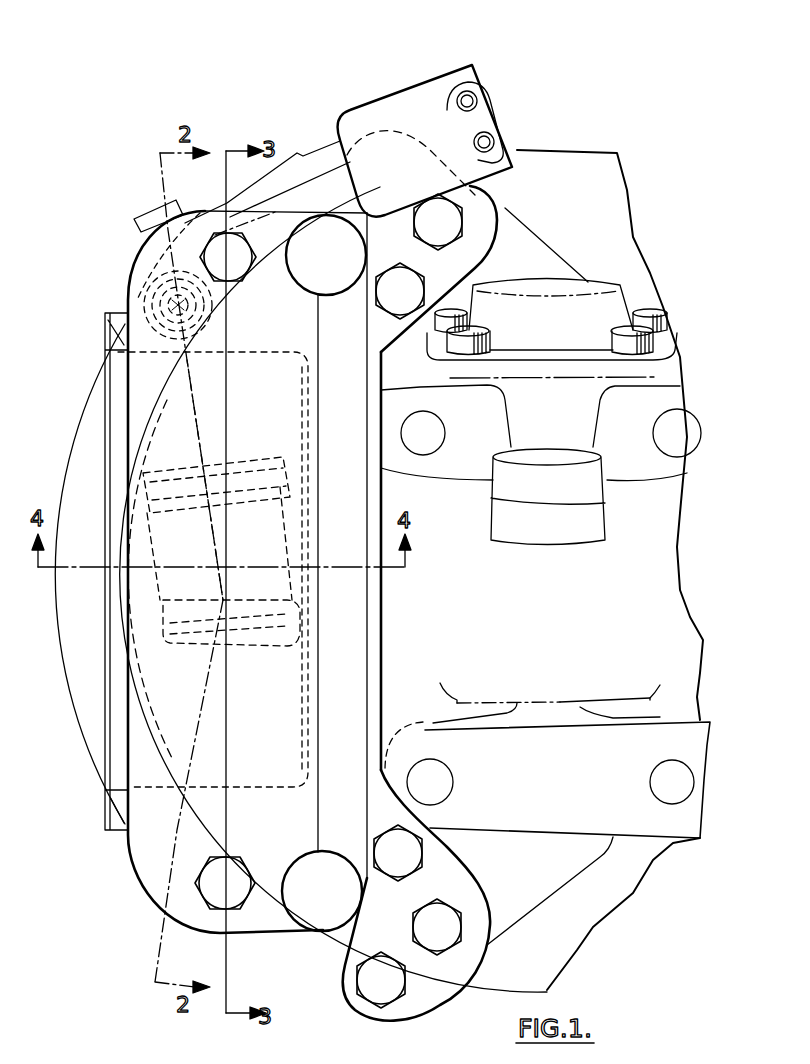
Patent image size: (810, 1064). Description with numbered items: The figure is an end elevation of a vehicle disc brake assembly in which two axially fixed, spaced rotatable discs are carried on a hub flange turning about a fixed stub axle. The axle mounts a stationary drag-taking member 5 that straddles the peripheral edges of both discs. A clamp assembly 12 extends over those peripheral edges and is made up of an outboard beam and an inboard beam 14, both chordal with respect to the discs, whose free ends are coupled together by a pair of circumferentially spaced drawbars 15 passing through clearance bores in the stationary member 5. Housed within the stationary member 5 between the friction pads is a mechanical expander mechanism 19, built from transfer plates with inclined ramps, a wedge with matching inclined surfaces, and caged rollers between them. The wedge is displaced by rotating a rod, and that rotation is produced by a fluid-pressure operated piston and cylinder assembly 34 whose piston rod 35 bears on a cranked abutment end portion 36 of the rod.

The stationary drag-taking member 5 is at (427, 983).
The clamp assembly 12 is at (143, 887).
The inboard beam 14 is at (147, 825).
The drawbars 15 is at (215, 898).
The mechanical expander mechanism 19 is at (165, 520).
The fluid-pressure operated piston and cylinder assembly 34 is at (380, 118).
The piston rod 35 is at (318, 182).
The cranked abutment end portion 36 is at (143, 220).